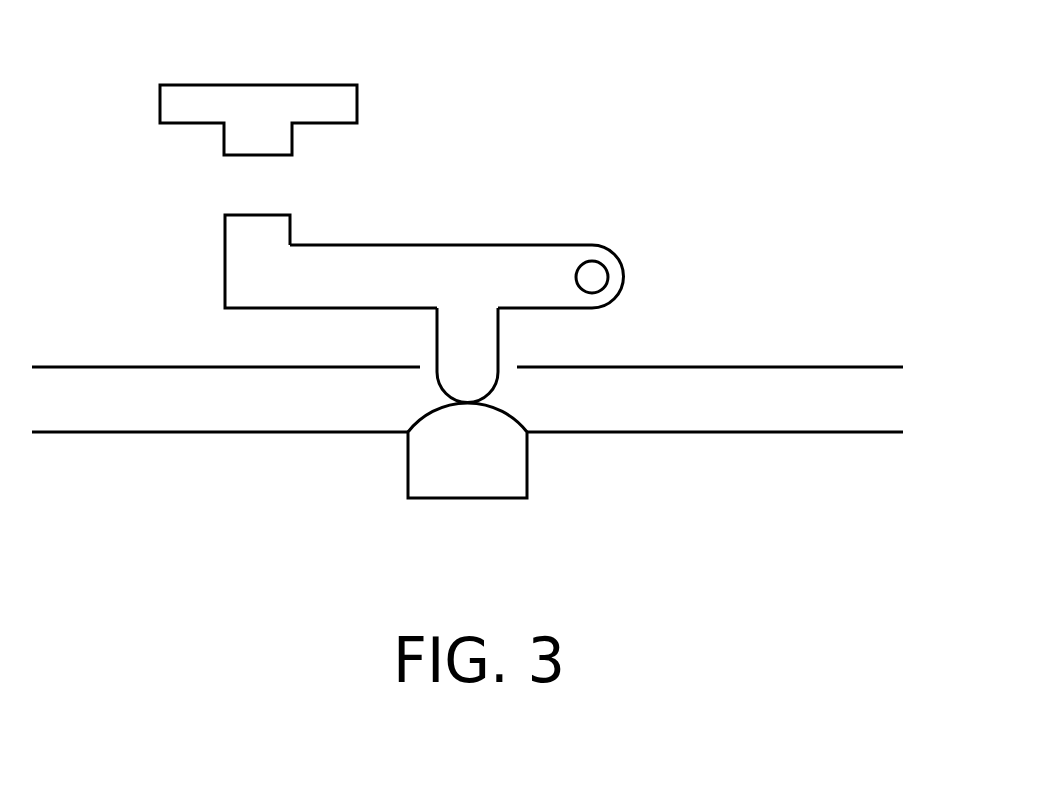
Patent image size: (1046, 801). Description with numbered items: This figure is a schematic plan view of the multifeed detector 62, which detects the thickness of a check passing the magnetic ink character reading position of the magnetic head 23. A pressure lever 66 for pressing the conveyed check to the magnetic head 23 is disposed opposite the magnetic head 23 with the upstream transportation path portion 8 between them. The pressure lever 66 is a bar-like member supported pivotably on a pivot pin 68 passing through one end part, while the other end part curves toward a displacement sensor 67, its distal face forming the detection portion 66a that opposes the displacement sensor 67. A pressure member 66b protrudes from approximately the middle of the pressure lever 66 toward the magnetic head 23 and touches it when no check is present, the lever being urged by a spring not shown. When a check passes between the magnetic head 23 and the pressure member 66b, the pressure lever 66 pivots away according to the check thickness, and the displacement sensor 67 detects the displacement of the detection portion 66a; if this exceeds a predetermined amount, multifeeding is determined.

The upstream transportation path portion 8 is at (798, 379).
The magnetic head 23 is at (528, 468).
The multifeed detector 62 is at (548, 165).
The pressure lever 66 is at (378, 245).
The detection portion 66a is at (247, 215).
The pressure member 66b is at (437, 340).
The displacement sensor 67 is at (328, 85).
The pivot pin 68 is at (608, 278).